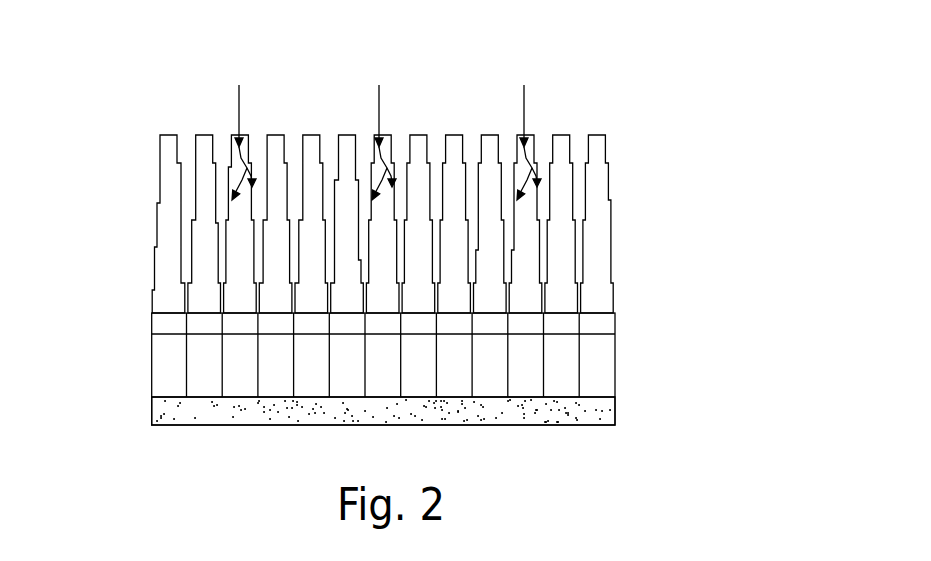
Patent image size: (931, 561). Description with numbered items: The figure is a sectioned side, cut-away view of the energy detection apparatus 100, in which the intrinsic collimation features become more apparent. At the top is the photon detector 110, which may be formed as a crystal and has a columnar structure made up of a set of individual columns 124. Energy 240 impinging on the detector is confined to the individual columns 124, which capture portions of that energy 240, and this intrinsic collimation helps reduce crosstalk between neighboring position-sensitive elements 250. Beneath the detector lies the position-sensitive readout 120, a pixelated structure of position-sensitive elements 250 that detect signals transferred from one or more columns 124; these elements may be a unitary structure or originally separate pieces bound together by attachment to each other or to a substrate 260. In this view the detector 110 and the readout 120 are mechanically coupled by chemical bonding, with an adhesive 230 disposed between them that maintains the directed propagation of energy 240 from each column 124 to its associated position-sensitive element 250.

The energy detection apparatus 100 is at (740, 135).
The photon detector 110 is at (128, 135).
The position-sensitive readout (PSR) 120 is at (128, 333).
The individual column 124 is at (608, 167).
The adhesive 230 is at (619, 313).
The energy 240 is at (239, 100).
The position-sensitive element 250 is at (615, 377).
The substrate 260 is at (615, 410).